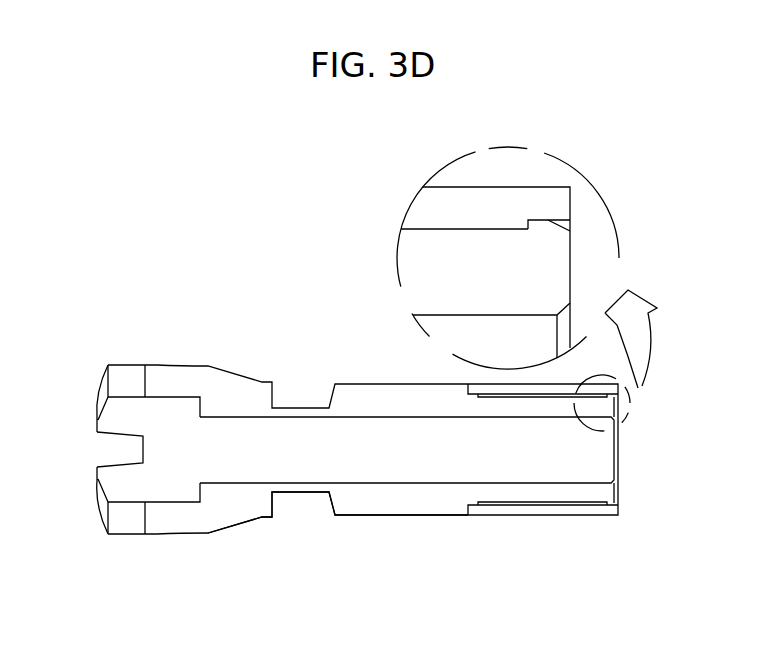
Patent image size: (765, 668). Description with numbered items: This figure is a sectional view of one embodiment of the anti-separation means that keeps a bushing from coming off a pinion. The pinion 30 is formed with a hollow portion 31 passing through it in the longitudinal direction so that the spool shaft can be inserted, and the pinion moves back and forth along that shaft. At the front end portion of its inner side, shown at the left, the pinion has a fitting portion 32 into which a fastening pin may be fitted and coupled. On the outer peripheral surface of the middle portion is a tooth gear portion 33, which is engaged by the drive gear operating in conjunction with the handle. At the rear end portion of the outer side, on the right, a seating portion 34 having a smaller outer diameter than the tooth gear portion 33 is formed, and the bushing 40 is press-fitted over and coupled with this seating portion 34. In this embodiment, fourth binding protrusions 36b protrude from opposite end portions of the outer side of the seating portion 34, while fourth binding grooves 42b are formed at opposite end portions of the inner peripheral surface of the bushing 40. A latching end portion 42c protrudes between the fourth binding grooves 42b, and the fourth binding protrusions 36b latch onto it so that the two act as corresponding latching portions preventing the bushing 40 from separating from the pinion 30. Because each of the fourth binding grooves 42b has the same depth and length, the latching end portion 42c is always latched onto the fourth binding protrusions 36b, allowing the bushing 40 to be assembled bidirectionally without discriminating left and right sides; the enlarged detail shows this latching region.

The pinion 30 is at (297, 403).
The hollow portion 31 is at (406, 451).
The fitting portion 32 is at (128, 458).
The tooth gear portion 33 is at (377, 515).
The seating portion 34 is at (530, 502).
The fourth binding protrusion 36b is at (550, 227).
The bushing 40 is at (560, 510).
The fourth binding groove 42b is at (548, 221).
The latching end portion 42c is at (452, 229).